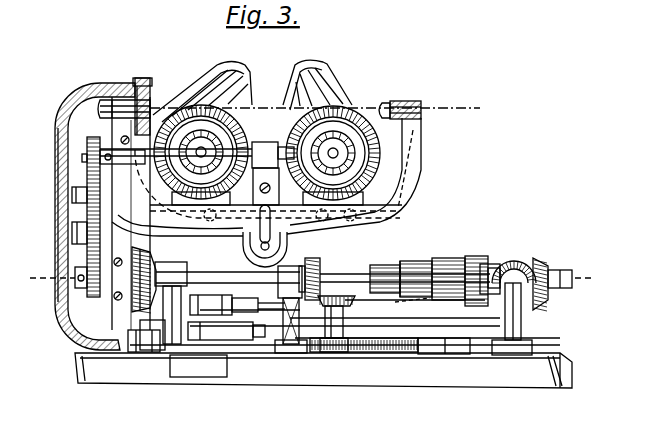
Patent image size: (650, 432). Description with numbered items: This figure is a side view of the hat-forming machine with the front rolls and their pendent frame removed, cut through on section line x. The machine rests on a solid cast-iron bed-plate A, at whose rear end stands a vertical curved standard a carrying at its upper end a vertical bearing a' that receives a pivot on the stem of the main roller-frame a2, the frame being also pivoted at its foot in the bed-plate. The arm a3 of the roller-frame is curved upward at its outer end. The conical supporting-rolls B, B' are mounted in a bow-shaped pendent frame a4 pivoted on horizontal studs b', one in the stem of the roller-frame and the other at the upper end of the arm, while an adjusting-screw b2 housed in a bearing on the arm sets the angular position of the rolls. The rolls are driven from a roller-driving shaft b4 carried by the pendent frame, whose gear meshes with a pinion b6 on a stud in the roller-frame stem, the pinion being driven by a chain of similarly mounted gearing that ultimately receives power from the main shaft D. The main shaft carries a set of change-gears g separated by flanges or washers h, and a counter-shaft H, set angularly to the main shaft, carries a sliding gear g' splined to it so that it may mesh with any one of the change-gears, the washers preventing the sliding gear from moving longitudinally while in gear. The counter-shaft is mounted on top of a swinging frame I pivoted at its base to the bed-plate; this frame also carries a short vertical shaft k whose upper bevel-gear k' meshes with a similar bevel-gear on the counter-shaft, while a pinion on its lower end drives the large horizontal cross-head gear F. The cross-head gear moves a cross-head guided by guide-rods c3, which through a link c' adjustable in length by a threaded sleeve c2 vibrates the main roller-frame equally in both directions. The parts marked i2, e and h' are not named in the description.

The vertical curved standard a is at (89, 216).
The vertical bearing a' is at (134, 101).
The main roller-frame a2 is at (266, 224).
The arm of the roller-frame a3 is at (328, 186).
The pendent frame a4 is at (392, 103).
The horizontal stud b' is at (237, 110).
The adjusting-screw b2 is at (199, 204).
The roller-driving shaft b4 is at (85, 157).
The pinion b6 is at (87, 190).
The bed-plate A is at (323, 363).
The conical supporting-roll B is at (202, 134).
The conical supporting-roll B' is at (331, 132).
The main shaft D is at (568, 264).
The counter-shaft H is at (345, 295).
The swinging frame I is at (349, 308).
The cross-head gear F is at (364, 338).
The short shaft k is at (237, 292).
The bevel-gear k' is at (332, 274).
The rack slide i2 is at (343, 352).
The stop block e is at (470, 352).
The change-gears g is at (429, 273).
The sliding gear g' is at (421, 279).
The flanges or washers h is at (487, 263).
The pulley key h' is at (407, 303).
The link c' is at (258, 299).
The threaded sleeve c2 is at (211, 298).
The guide-rods c3 is at (202, 345).
The section line x is at (306, 196).